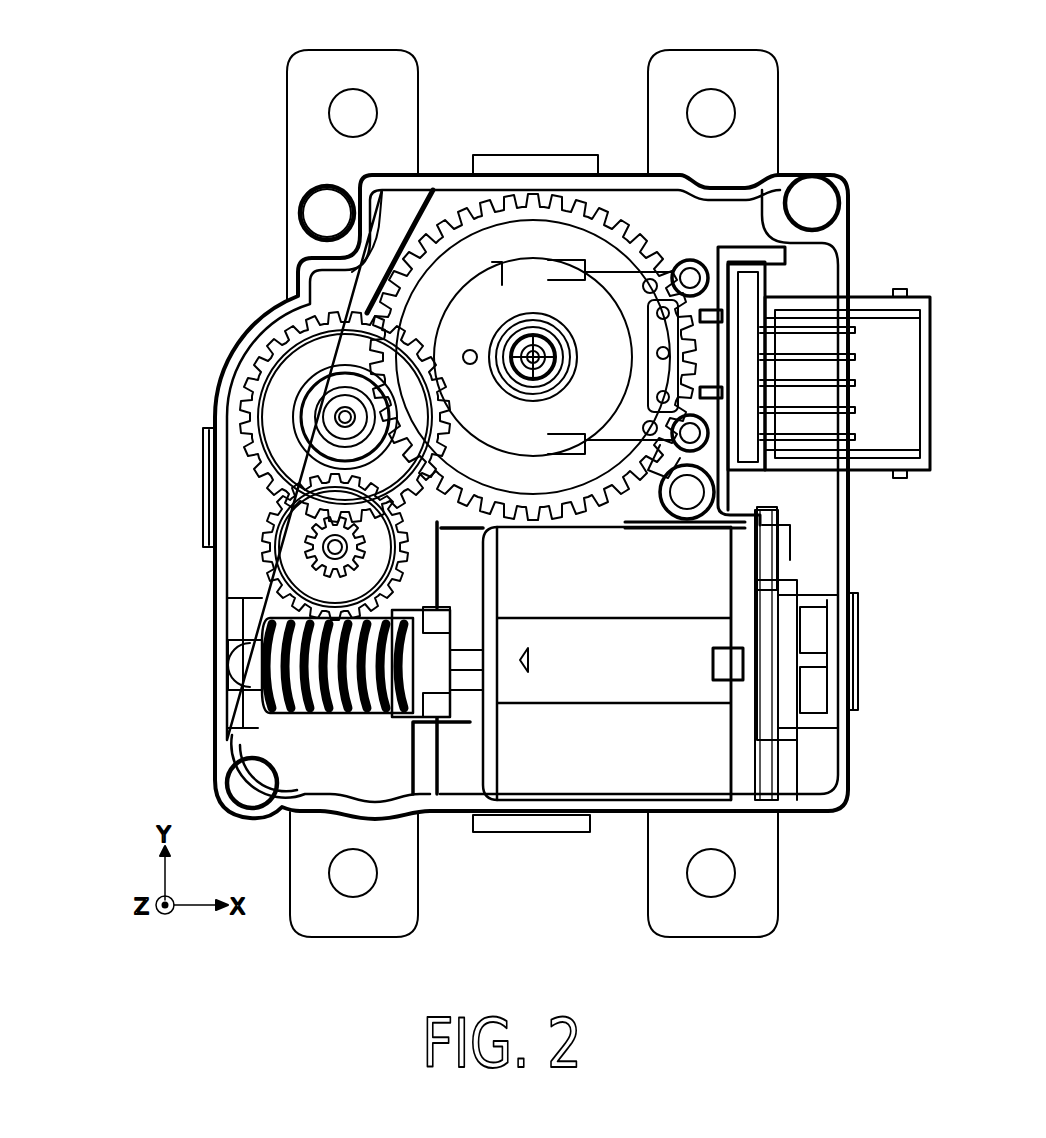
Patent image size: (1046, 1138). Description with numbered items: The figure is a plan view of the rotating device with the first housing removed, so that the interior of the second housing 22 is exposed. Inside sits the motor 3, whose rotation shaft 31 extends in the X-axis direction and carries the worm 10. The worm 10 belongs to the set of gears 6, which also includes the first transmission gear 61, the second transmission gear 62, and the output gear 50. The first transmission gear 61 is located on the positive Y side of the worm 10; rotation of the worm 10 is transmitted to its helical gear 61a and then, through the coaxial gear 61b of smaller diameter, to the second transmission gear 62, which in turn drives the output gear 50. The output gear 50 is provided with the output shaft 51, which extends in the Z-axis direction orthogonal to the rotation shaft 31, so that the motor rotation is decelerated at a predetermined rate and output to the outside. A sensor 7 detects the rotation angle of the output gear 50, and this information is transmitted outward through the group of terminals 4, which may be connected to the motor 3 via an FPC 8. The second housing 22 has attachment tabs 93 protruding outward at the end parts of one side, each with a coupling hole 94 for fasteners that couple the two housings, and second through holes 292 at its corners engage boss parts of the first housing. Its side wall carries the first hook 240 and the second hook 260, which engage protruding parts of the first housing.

The motor 3 is at (602, 775).
The group of terminals 4 is at (878, 385).
The set of gears 6 is at (368, 360).
The sensor 7 is at (613, 340).
The FPC 8 is at (762, 562).
The worm 10 is at (257, 668).
The second housing 22 is at (447, 175).
The rotation shaft 31 is at (455, 665).
The output gear 50 is at (433, 293).
The output shaft 51 is at (530, 350).
The first transmission gear 61 is at (249, 547).
The helical gear 61a is at (300, 583).
The gear 61b is at (312, 545).
The second transmission gear 62 is at (275, 398).
The attachment tab 93 is at (297, 97).
The coupling hole 94 is at (352, 113).
The first hook 240 is at (860, 645).
The second hook 260 is at (563, 833).
The second through hole 292 is at (322, 212).